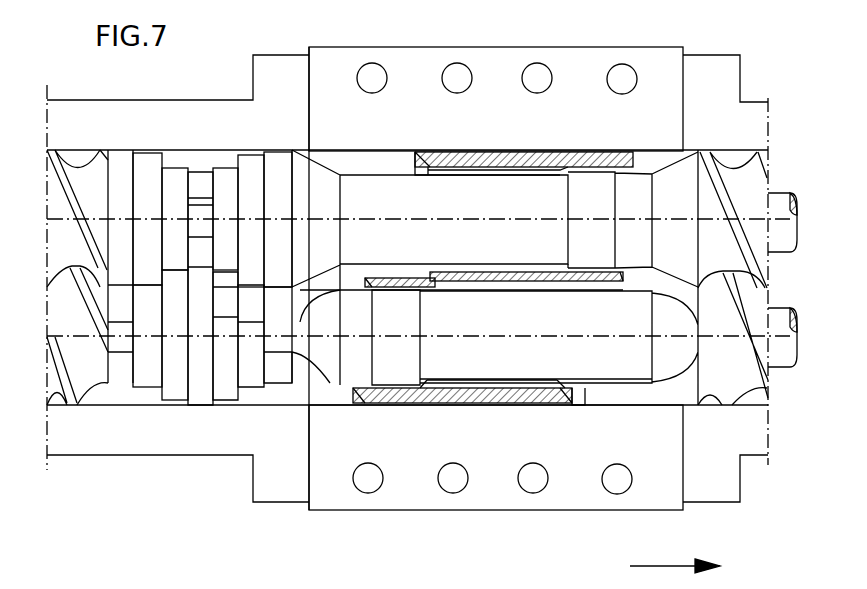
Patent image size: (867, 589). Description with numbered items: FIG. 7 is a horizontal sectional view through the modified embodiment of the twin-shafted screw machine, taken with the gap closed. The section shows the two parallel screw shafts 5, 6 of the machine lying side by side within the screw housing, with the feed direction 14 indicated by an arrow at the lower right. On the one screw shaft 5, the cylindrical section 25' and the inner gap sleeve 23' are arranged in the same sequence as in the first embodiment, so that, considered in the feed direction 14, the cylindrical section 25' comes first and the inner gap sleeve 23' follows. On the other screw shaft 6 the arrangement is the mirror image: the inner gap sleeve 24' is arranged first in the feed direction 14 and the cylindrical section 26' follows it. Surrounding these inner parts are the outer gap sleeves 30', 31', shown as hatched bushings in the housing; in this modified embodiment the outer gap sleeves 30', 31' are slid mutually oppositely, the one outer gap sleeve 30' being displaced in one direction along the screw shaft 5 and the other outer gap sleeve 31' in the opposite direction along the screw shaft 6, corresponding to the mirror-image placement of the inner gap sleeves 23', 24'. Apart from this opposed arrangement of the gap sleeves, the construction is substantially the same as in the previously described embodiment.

The cylindrical section 25' is at (454, 137).
The outer gap sleeve 30' is at (524, 93).
The inner gap sleeve 23' is at (633, 149).
The inner gap sleeve 24' is at (396, 422).
The outer gap sleeve 31' is at (469, 467).
The cylindrical section 26' is at (559, 352).
The screw shaft 5 is at (778, 207).
The screw shaft 6 is at (782, 357).
The feed direction 14 is at (669, 563).